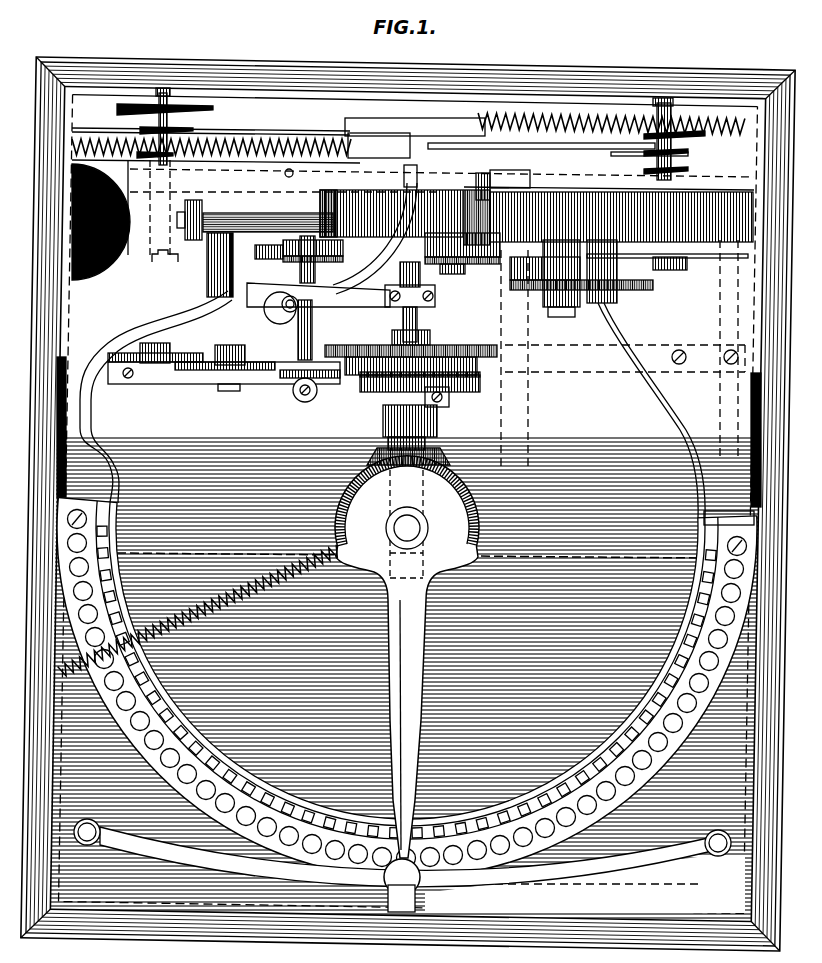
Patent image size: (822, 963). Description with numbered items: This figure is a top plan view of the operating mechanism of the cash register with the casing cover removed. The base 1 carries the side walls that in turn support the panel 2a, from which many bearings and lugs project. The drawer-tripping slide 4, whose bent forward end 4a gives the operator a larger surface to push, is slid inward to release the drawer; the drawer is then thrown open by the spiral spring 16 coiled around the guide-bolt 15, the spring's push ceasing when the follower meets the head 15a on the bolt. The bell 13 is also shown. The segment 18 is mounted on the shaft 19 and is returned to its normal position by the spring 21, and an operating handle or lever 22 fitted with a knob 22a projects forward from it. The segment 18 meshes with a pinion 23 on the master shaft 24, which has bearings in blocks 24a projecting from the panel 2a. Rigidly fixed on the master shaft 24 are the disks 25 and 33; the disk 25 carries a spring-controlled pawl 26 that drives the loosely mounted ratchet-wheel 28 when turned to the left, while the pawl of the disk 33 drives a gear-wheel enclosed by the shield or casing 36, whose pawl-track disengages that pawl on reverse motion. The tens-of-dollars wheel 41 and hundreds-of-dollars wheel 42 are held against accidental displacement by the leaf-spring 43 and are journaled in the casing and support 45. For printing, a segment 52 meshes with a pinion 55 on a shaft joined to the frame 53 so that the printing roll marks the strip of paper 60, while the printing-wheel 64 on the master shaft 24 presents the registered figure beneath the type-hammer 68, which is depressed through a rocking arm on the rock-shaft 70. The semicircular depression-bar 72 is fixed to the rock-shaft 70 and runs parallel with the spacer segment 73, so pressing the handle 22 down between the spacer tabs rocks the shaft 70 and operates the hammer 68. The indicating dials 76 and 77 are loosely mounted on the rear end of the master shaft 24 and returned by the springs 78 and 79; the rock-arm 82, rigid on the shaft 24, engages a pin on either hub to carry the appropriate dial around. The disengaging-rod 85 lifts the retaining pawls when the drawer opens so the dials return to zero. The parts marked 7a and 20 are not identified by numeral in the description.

The base 1 is at (652, 68).
The panel 2a is at (405, 540).
The drawer-tripping slide 4 is at (445, 789).
The forward end of drawer-tripping slide 4a is at (428, 906).
The lever arm 7a is at (170, 368).
The bell 13 is at (128, 266).
The guide-bolt 15 is at (158, 215).
The head of guide-bolt 15a is at (167, 264).
The spiral spring 16 is at (205, 106).
The segment 18 is at (407, 520).
The shaft 19 is at (422, 526).
The hub 20 is at (384, 546).
The spring 21 is at (310, 548).
The operating handle 22 is at (407, 684).
The knob 22a is at (402, 885).
The pinion 23 is at (452, 456).
The master shaft 24 is at (434, 412).
The bearing blocks 24a is at (369, 431).
The disk 25 is at (498, 354).
The spring-controlled pawl 26 is at (482, 372).
The ratchet-wheel 28 is at (376, 370).
The disk 33 is at (450, 266).
The shield 36 is at (440, 290).
The tens-of-dollars wheel 41 is at (290, 380).
The hundreds-of-dollars wheel 42 is at (218, 374).
The leaf-spring 43 is at (141, 376).
The casing 45 is at (190, 380).
The segment 52 is at (645, 284).
The frame 53 is at (472, 176).
The pinion 55 is at (520, 290).
The strip of paper 60 is at (537, 216).
The printing-wheel 64 is at (322, 212).
The type-hammer 68 is at (335, 295).
The rock-shaft 70 is at (240, 226).
The depression-bar 72 is at (285, 797).
The spacer segment 73 is at (310, 868).
The indicating-dial 76 is at (505, 148).
The indicating-dial 77 is at (277, 124).
The returning spring 78 is at (550, 114).
The returning spring 79 is at (296, 142).
The operating rock-arm 82 is at (412, 100).
The disengaging-rod 85 is at (285, 174).